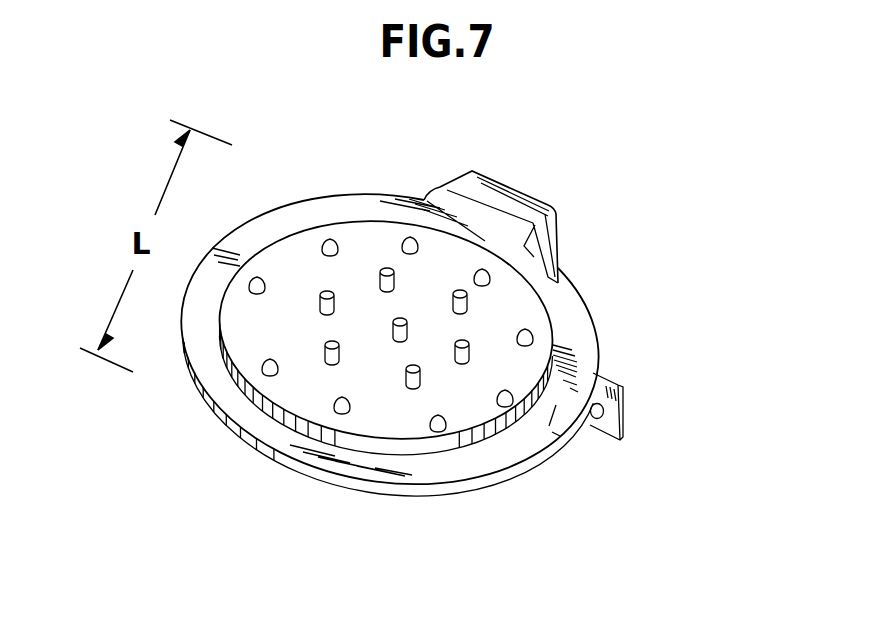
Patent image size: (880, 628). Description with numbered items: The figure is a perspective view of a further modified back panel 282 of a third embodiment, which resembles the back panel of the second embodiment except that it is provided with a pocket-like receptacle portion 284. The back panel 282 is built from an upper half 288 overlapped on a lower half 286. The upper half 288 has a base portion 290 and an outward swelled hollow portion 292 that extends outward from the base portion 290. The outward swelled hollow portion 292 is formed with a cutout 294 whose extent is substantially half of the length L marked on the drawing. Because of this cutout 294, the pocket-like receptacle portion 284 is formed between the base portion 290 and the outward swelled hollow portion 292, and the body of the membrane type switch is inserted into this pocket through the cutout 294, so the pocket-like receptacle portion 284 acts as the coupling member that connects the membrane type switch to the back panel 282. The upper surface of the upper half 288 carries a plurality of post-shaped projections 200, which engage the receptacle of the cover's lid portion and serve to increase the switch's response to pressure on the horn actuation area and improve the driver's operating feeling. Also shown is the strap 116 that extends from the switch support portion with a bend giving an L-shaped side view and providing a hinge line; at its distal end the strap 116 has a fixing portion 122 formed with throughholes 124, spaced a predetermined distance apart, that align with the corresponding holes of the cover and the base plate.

The back panel 282 is at (630, 255).
The upper half 288 is at (355, 196).
The base portion 290 is at (253, 427).
The outward swelled hollow portion 292 is at (282, 253).
The cutout 294 is at (530, 442).
The projections 200 is at (470, 306).
The lower half 286 is at (460, 187).
The strap 116 is at (560, 238).
The fixing portion 122 is at (628, 412).
The throughholes 124 is at (600, 419).
The pocket-like receptacle portion 284 is at (541, 414).